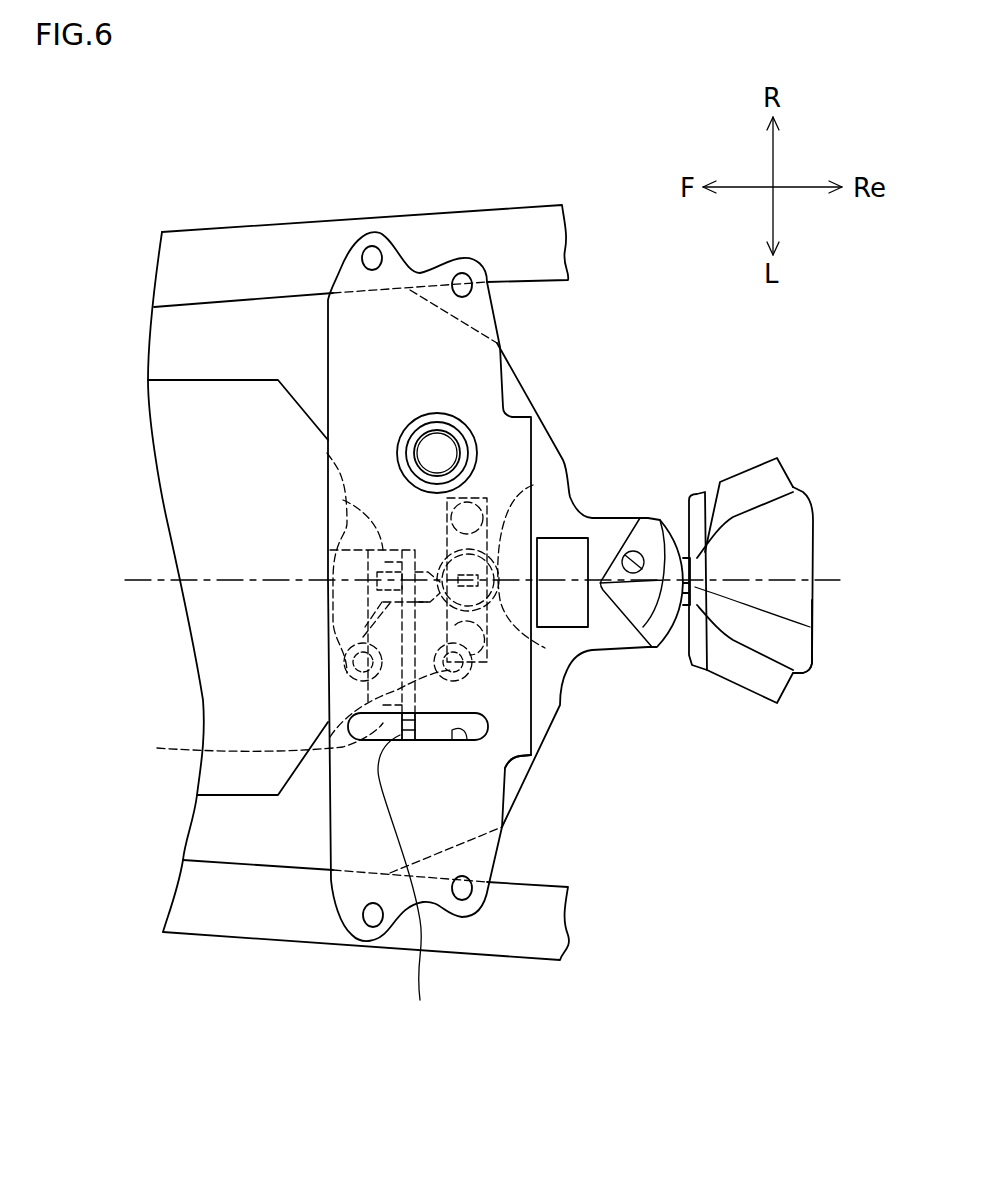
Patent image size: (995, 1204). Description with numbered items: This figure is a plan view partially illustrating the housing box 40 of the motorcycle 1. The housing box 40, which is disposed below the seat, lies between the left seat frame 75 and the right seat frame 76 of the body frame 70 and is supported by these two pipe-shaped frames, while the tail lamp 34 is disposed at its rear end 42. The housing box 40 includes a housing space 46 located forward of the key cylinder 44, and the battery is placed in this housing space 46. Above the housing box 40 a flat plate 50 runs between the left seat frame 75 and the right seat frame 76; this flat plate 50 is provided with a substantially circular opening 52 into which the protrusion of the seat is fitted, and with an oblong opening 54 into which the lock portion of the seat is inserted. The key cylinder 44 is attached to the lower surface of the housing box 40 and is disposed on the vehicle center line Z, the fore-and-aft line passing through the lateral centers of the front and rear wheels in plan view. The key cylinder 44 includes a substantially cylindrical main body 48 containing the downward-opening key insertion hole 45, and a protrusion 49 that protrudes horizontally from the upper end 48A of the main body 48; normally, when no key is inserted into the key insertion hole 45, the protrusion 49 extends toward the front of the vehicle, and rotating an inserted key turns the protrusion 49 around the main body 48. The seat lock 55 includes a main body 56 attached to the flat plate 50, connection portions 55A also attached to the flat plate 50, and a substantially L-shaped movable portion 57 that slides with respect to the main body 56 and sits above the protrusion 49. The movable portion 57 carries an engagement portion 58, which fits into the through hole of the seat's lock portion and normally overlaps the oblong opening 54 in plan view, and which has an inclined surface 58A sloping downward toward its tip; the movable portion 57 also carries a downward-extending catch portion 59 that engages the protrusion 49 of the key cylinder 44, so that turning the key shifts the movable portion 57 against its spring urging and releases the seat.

The motorcycle 1 is at (647, 334).
The tail lamp 34 is at (812, 673).
The housing box 40 is at (536, 781).
The rear end 42 is at (810, 627).
The key cylinder 44 is at (500, 610).
The key insertion hole 45 is at (497, 612).
The housing space 46 is at (223, 795).
The main body 48 is at (497, 553).
The upper end 48A is at (533, 485).
The protrusion 49 is at (327, 550).
The flat plate 50 is at (310, 812).
The circular opening 52 is at (455, 466).
The oblong opening 54 is at (531, 755).
The seat lock 55 is at (410, 720).
The connection portions 55A is at (380, 707).
The main body 56 is at (377, 632).
The movable portion 57 is at (383, 708).
The engagement portion 58 is at (420, 735).
The inclined surface 58A is at (416, 886).
The catch portion 59 is at (343, 500).
The body frame 70 is at (358, 582).
The left seat frame 75 is at (287, 927).
The right seat frame 76 is at (230, 240).
The vehicle center line Z is at (140, 580).